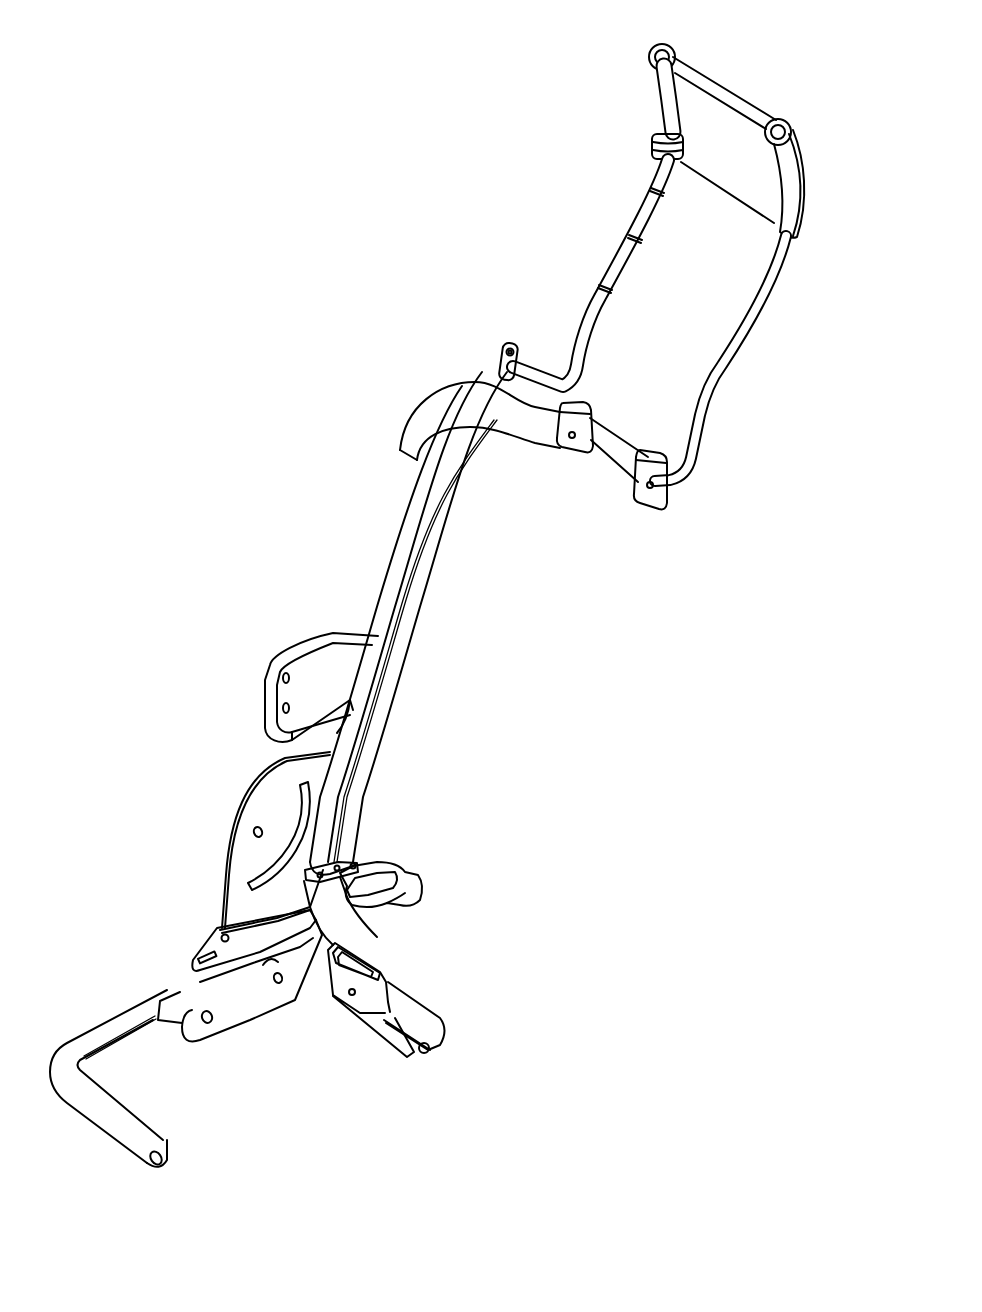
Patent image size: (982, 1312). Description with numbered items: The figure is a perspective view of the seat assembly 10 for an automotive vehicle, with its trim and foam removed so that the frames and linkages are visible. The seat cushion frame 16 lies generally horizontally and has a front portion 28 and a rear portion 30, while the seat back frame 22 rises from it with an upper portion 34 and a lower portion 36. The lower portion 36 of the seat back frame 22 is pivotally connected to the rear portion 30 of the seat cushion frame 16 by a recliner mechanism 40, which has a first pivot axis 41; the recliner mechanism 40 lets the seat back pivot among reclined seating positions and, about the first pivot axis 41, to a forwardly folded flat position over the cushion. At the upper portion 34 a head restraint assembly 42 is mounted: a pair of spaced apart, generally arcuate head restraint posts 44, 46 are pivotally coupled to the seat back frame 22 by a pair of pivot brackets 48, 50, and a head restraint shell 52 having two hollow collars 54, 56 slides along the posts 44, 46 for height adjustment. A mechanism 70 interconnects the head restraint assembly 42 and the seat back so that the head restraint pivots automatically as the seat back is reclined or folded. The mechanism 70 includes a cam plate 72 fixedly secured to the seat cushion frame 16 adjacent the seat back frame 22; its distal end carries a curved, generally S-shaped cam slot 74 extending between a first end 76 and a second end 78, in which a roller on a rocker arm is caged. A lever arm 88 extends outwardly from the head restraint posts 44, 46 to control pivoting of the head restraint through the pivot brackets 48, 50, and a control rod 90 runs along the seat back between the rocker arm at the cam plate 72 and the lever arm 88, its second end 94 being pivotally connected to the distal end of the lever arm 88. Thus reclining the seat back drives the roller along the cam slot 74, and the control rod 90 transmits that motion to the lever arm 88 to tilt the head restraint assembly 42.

The seat assembly 10 is at (205, 437).
The seat cushion frame 16 is at (120, 1020).
The seat back frame 22 is at (387, 592).
The front portion 28 is at (120, 1137).
The rear portion 30 is at (423, 1007).
The upper portion 34 is at (607, 483).
The lower portion 36 is at (358, 828).
The recliner mechanism 40 is at (222, 892).
The first pivot axis 41 is at (253, 835).
The head restraint assembly 42 is at (797, 125).
The head restraint post 44 is at (645, 235).
The head restraint post 46 is at (757, 330).
The pivot bracket 48 is at (563, 447).
The pivot bracket 50 is at (670, 497).
The head restraint shell 52 is at (712, 82).
The hollow collar 54 is at (657, 97).
The hollow collar 56 is at (806, 212).
The mechanism 70 is at (472, 708).
The cam plate 72 is at (282, 994).
The cam slot 74 is at (397, 867).
The first end 76 is at (357, 922).
The second end 78 is at (392, 897).
The lever arm 88 is at (513, 346).
The control rod 90 is at (430, 537).
The second end 94 is at (500, 352).